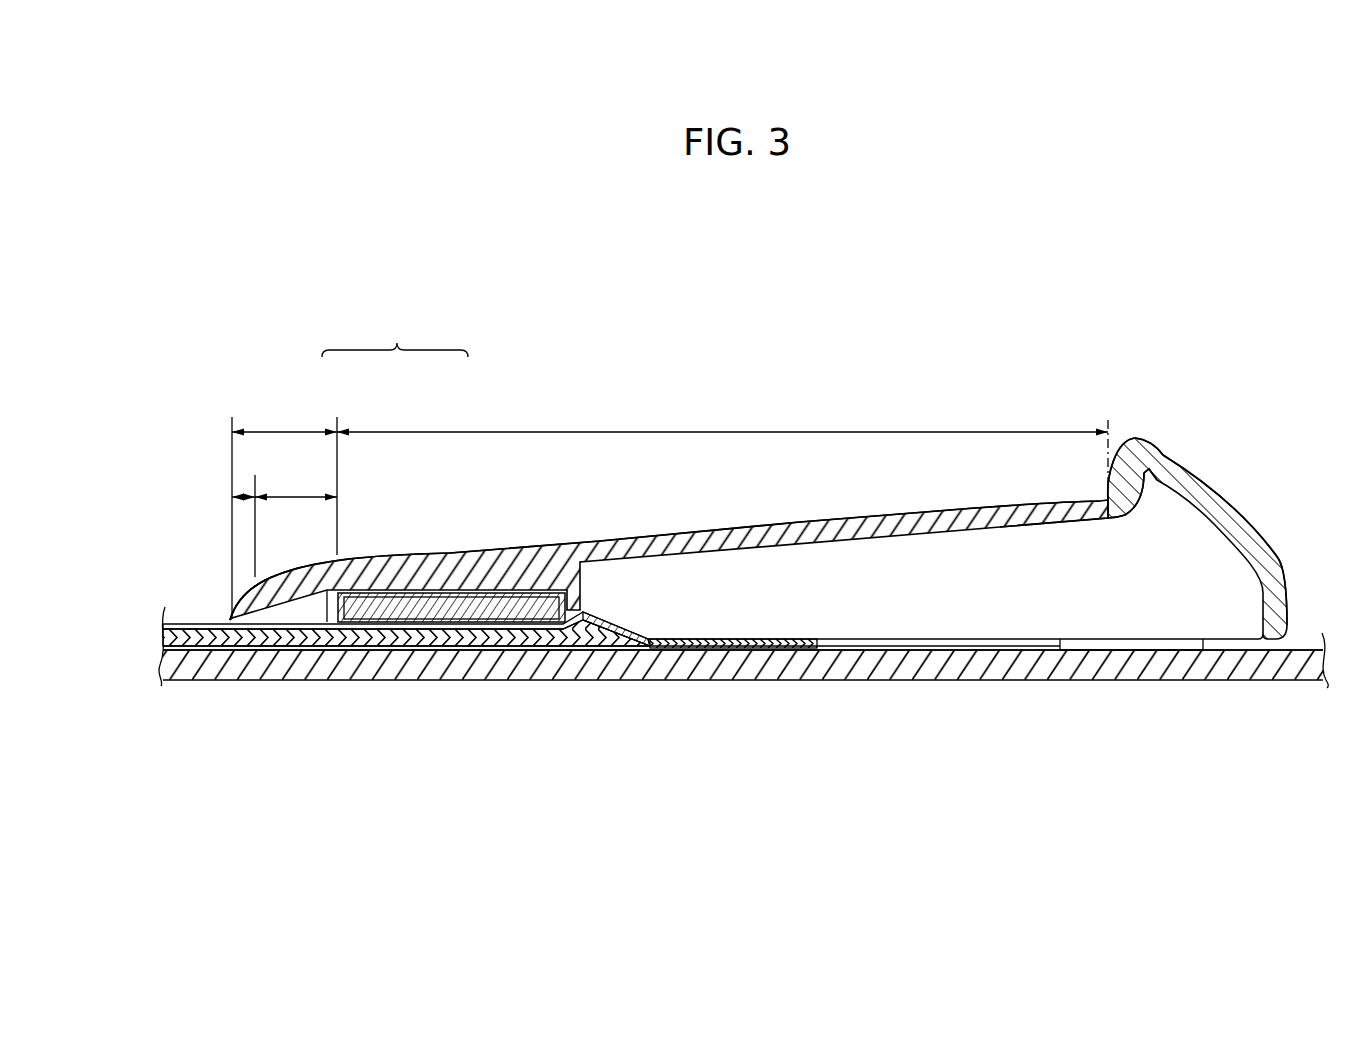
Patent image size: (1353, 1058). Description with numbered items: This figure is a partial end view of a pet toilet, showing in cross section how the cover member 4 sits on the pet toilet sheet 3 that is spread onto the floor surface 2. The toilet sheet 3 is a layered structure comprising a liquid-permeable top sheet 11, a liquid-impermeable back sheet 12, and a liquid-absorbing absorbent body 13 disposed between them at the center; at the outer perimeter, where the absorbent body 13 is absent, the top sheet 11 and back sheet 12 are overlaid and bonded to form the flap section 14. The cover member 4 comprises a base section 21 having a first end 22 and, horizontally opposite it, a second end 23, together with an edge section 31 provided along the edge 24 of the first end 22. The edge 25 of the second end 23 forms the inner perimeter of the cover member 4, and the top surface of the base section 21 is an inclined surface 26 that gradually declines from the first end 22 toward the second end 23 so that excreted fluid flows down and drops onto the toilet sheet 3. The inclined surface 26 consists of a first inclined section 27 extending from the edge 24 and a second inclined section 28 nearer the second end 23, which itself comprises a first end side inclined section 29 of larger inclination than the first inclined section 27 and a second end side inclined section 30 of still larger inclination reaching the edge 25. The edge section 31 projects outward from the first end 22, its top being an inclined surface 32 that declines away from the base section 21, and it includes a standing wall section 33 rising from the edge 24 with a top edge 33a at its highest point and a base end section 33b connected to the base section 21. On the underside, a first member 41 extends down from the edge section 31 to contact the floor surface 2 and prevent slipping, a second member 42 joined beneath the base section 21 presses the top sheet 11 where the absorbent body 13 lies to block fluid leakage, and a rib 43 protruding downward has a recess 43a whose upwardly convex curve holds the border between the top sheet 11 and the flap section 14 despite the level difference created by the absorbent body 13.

The floor surface 2 is at (1295, 642).
The pet toilet sheet 3 is at (593, 658).
The cover member 4 is at (992, 358).
The top sheet 11 is at (217, 622).
The back sheet 12 is at (337, 648).
The absorbent body 13 is at (371, 648).
The flap section 14 is at (727, 640).
The base section 21 is at (853, 550).
The first end 22 is at (1090, 483).
The second end 23 is at (208, 598).
The edge of the first end 24 is at (1127, 505).
The edge of the second end 25 is at (228, 619).
The inclined surface 26 is at (395, 332).
The first inclined section 27 is at (490, 432).
The second inclined section 28 is at (283, 432).
The first end side inclined section 29 is at (296, 497).
The second end side inclined section 30 is at (243, 495).
The edge section 31 is at (1212, 475).
The inclined surface of the edge section 32 is at (1245, 518).
The standing wall section 33 is at (1118, 445).
The top edge 33a is at (1131, 440).
The base end section 33b is at (1153, 471).
The first member 41 is at (1133, 652).
The second member 42 is at (434, 621).
The rib 43 is at (948, 612).
The recess 43a is at (607, 633).